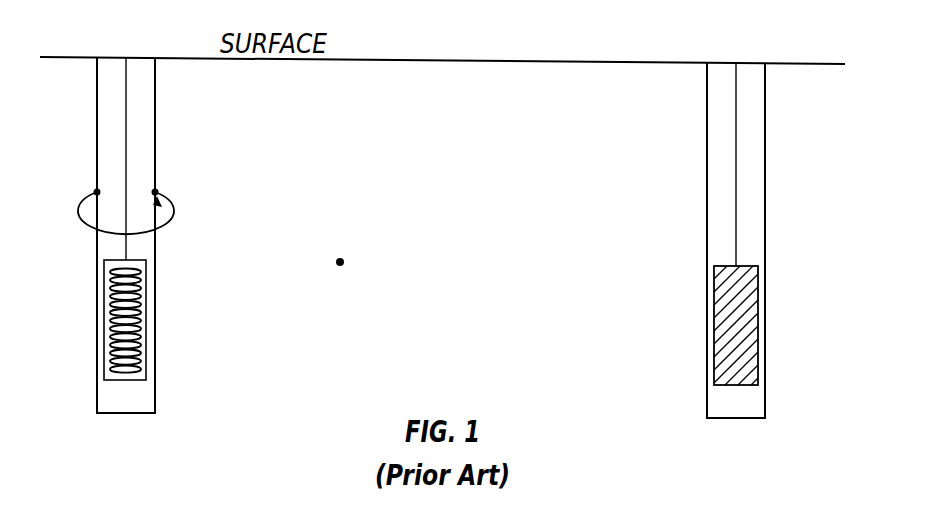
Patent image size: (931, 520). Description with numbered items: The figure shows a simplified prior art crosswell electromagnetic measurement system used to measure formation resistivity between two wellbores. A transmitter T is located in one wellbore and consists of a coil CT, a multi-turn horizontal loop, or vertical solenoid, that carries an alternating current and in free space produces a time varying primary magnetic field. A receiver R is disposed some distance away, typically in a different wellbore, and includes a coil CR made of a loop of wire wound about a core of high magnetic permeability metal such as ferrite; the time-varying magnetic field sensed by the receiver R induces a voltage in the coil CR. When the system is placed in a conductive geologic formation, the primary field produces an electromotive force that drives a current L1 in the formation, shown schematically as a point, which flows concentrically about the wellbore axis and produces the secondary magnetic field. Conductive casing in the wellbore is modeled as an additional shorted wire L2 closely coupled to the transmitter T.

The transmitter T is at (172, 255).
The coil CT is at (142, 332).
The shorted wire L2 is at (157, 189).
The current L1 is at (363, 247).
The receiver R is at (783, 261).
The coil CR is at (751, 313).